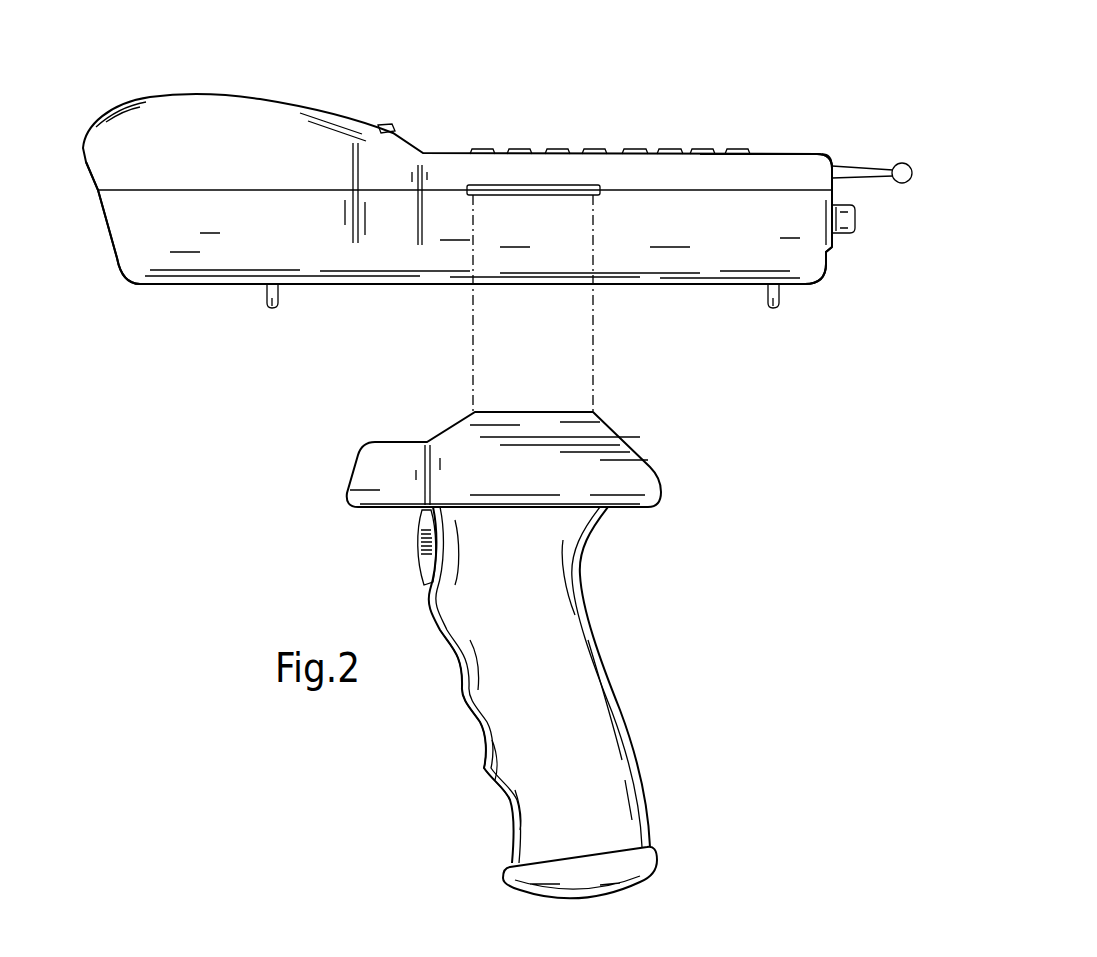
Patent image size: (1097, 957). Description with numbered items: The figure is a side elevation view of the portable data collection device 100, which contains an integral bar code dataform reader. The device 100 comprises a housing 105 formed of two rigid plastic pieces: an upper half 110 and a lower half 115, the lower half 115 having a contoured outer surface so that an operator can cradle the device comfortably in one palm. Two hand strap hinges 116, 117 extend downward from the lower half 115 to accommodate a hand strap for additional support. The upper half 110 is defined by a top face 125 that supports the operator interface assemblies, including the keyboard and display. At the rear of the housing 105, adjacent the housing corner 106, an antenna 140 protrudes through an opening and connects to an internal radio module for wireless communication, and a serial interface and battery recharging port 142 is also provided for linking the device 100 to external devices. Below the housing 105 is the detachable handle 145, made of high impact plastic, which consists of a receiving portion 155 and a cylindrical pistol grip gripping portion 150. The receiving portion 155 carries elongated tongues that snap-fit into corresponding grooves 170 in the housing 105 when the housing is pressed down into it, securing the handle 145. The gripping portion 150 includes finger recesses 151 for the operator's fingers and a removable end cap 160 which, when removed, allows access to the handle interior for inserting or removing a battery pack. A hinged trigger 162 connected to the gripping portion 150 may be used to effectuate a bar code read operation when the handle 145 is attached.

The portable data collection device 100 is at (631, 74).
The housing 105 is at (94, 174).
The upper half 110 is at (787, 152).
The housing rear upper corner 106 is at (835, 158).
The antenna 140 is at (865, 163).
The serial interface and battery recharging port 142 is at (860, 215).
The lower half 115 is at (827, 263).
The hand strap hinge 116 is at (271, 310).
The hand strap hinge 117 is at (775, 310).
The top face 125 is at (613, 153).
The groove 170 is at (596, 183).
The receiving portion 155 is at (645, 466).
The detachable handle 145 is at (702, 498).
The hinged trigger 162 is at (420, 540).
The pistol grip gripping portion 150 is at (588, 703).
The finger recesses 151 is at (513, 820).
The removable end cap 160 is at (660, 863).